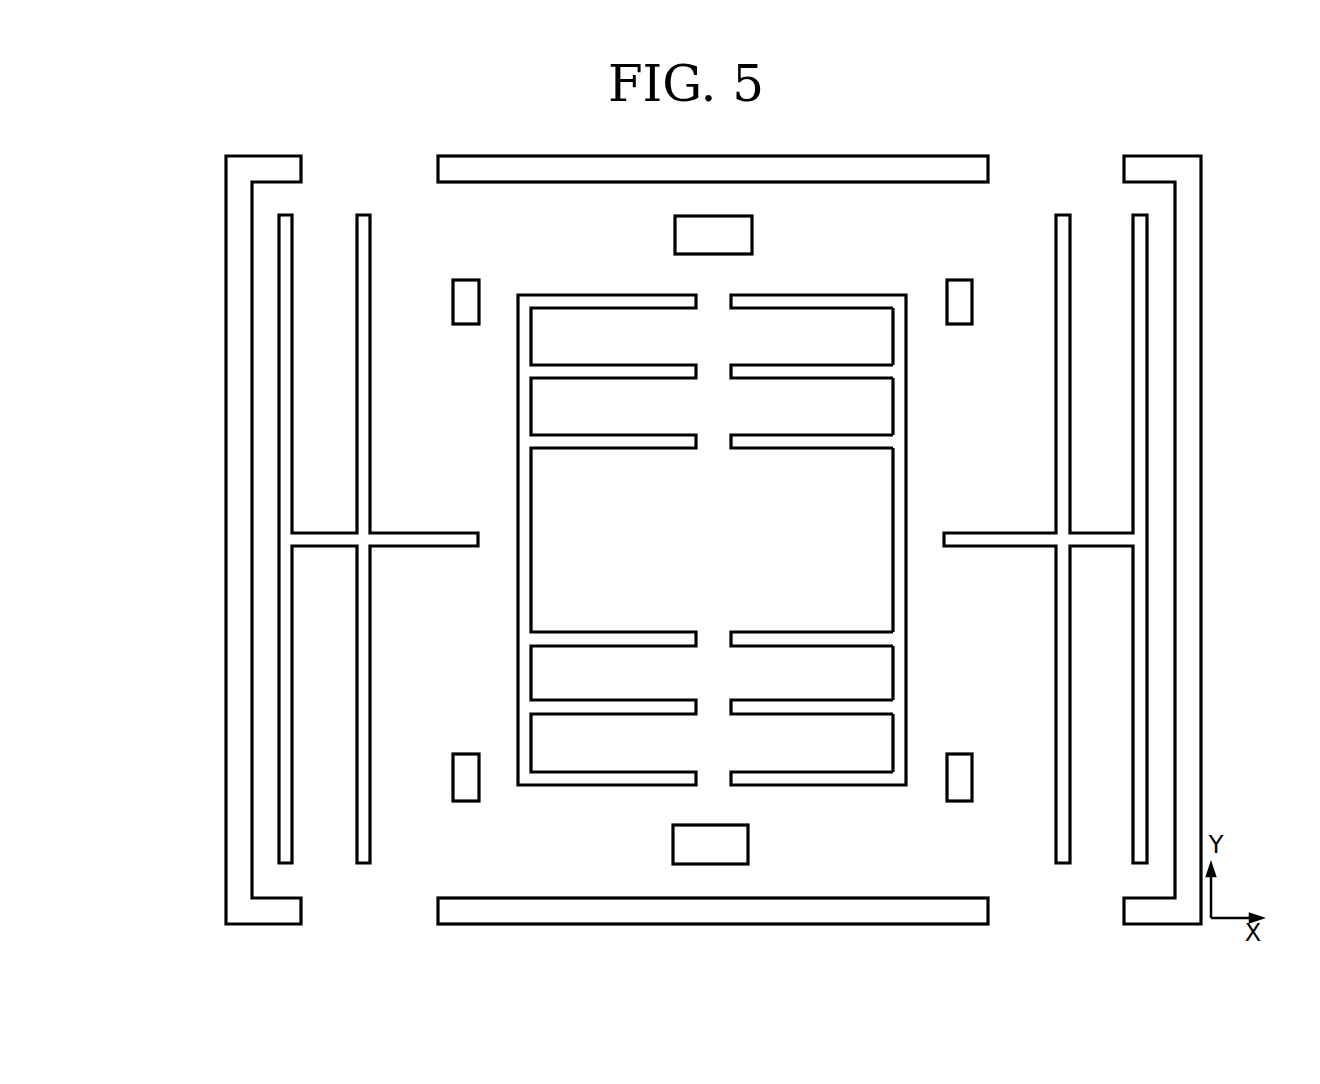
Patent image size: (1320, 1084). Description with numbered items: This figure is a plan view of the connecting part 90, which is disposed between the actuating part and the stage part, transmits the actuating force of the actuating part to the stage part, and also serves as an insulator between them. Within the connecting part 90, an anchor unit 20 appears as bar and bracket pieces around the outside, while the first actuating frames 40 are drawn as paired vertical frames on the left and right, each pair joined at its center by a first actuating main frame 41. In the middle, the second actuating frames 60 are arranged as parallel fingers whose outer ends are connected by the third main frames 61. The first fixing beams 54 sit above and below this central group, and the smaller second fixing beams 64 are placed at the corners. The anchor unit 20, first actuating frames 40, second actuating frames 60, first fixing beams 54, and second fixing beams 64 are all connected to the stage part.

The anchor unit 20 is at (939, 170).
The first actuating frames 40 is at (1140, 423).
The first actuating main frame 41 is at (1098, 546).
The first fixing beams 54 is at (678, 234).
The second actuating frames 60 is at (838, 303).
The third main frames 61 is at (897, 523).
The second fixing beams 64 is at (466, 292).
The connecting part 90 is at (212, 499).